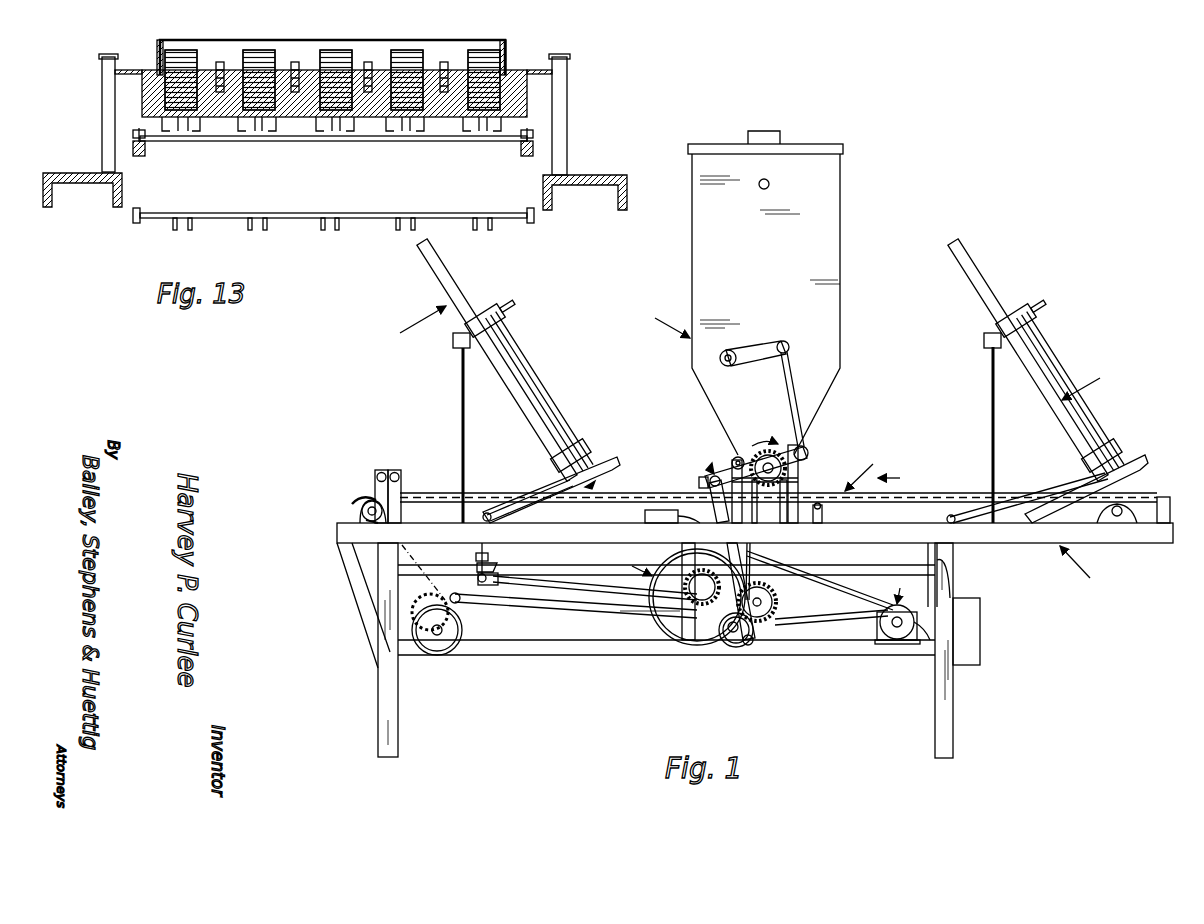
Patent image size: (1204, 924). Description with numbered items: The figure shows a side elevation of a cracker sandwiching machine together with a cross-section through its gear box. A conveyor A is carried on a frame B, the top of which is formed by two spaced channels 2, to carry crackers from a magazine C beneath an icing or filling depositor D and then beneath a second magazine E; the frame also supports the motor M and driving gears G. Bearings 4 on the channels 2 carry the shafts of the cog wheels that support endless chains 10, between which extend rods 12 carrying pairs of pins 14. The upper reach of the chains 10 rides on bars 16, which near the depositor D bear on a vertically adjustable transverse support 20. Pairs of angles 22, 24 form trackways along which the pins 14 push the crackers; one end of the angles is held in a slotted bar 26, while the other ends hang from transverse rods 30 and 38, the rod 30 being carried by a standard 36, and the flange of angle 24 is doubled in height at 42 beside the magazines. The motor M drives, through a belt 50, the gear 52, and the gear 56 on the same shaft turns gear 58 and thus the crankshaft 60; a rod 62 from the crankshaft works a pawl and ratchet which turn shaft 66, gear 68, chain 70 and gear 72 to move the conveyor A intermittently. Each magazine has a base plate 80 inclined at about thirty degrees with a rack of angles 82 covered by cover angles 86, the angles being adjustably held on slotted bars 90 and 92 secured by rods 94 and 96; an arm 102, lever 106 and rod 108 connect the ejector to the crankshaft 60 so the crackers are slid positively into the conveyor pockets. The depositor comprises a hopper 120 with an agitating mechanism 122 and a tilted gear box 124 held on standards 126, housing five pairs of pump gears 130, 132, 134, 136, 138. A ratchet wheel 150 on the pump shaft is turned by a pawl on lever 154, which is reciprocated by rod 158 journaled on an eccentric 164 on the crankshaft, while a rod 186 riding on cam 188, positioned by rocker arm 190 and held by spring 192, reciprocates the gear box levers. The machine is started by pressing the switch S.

In FIG. 13, the channels 2 is at (86, 183).
In FIG. 1, the channels 2 is at (337, 533).
In FIG. 1, the bearings 4 is at (355, 514).
In FIG. 13, the endless chains 10 is at (146, 136).
In FIG. 1, the endless chains 10 is at (604, 496).
In FIG. 13, the rods 12 is at (236, 141).
In FIG. 13, the pins 14 is at (335, 132).
In FIG. 13, the bars 16 is at (139, 157).
In FIG. 1, the bars 16 is at (622, 502).
In FIG. 1, the supplemental transverse support 20 is at (823, 513).
In FIG. 13, the angle 22 is at (318, 132).
In FIG. 1, the angle 22 is at (352, 500).
In FIG. 13, the angle 24 is at (360, 132).
In FIG. 1, the bar 26 is at (1165, 497).
In FIG. 1, the transverse rod 30 is at (398, 472).
In FIG. 1, the standard 36 is at (402, 482).
In FIG. 1, the transverse rod 38 is at (376, 472).
In FIG. 1, the doubled flange 42 is at (480, 492).
In FIG. 1, the belt 50 is at (830, 586).
In FIG. 1, the gear 52 is at (672, 562).
In FIG. 1, the gear 56 is at (704, 578).
In FIG. 1, the gear 58 is at (770, 598).
In FIG. 1, the crankshaft 60 is at (731, 643).
In FIG. 1, the rod 62 is at (544, 606).
In FIG. 1, the shaft 66 is at (438, 636).
In FIG. 1, the gear 68 is at (450, 640).
In FIG. 1, the chain 70 is at (436, 596).
In FIG. 1, the gear 72 is at (372, 522).
In FIG. 1, the base plate 80 is at (608, 458).
In FIG. 1, the angle 82 is at (425, 265).
In FIG. 1, the cover angle 86 is at (1030, 348).
In FIG. 1, the bar 90 is at (1055, 453).
In FIG. 1, the bar 92 is at (983, 340).
In FIG. 1, the rods 94 is at (1072, 474).
In FIG. 1, the rods 96 is at (992, 428).
In FIG. 1, the arm 102 is at (528, 496).
In FIG. 1, the lever 106 is at (490, 553).
In FIG. 1, the rod 108 is at (565, 586).
In FIG. 13, the hopper 120 is at (506, 45).
In FIG. 1, the hopper 120 is at (692, 257).
In FIG. 1, the agitating mechanism 122 is at (752, 352).
In FIG. 13, the gear box 124 is at (150, 95).
In FIG. 13, the standards 126 is at (102, 110).
In FIG. 1, the standards 126 is at (800, 492).
In FIG. 13, the gears 130 is at (167, 64).
In FIG. 13, the gears 132 is at (244, 64).
In FIG. 13, the gears 134 is at (346, 63).
In FIG. 13, the gears 136 is at (424, 63).
In FIG. 13, the gears 138 is at (462, 115).
In FIG. 1, the ratchet wheel 150 is at (762, 450).
In FIG. 1, the lever 154 is at (736, 457).
In FIG. 1, the rod 158 is at (706, 477).
In FIG. 1, the eccentric 164 is at (750, 645).
In FIG. 1, the rod 186 is at (753, 548).
In FIG. 1, the cam 188 is at (718, 633).
In FIG. 1, the rocker arm 190 is at (668, 615).
In FIG. 1, the spring 192 is at (762, 612).
In FIG. 1, the conveyor A is at (872, 468).
In FIG. 1, the frame B is at (1081, 570).
In FIG. 1, the magazine C is at (1091, 381).
In FIG. 1, the depositor D is at (662, 323).
In FIG. 1, the second magazine E is at (415, 326).
In FIG. 1, the driving gears G is at (632, 565).
In FIG. 1, the motor M is at (902, 607).
In FIG. 1, the switch S is at (658, 515).